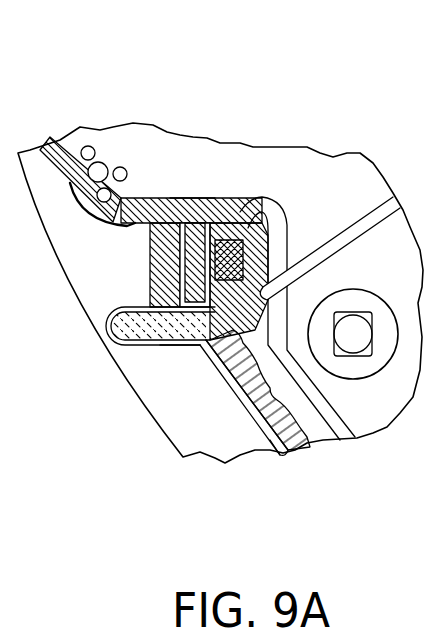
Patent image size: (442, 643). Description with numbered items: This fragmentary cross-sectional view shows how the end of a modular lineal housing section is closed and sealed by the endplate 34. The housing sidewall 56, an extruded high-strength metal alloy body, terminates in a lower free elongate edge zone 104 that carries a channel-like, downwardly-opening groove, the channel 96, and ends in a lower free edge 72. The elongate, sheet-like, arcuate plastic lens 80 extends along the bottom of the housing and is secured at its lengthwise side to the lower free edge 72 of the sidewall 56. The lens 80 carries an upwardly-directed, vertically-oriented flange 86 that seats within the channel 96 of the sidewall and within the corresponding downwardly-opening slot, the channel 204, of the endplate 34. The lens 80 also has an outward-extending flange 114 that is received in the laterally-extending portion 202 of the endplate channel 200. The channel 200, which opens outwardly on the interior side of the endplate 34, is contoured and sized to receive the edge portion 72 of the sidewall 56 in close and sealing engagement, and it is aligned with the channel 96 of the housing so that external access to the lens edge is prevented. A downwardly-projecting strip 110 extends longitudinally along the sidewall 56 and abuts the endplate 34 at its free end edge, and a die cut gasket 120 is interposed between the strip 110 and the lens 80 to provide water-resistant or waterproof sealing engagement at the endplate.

The endplate 34 is at (247, 437).
The housing sidewall 56 is at (88, 192).
The lower free edge 72 is at (147, 227).
The lens 80 is at (240, 450).
The upwardly-directed flange 86 is at (147, 265).
The channel 96 is at (243, 235).
The lower free elongate edge zone 104 is at (180, 197).
The downwardly-projecting strip 110 is at (117, 313).
The outward-extending flange 114 is at (140, 347).
The die cut gasket 120 is at (273, 232).
The channel 200 is at (247, 393).
The laterally-extending portion 202 is at (167, 350).
The channel 204 is at (192, 197).